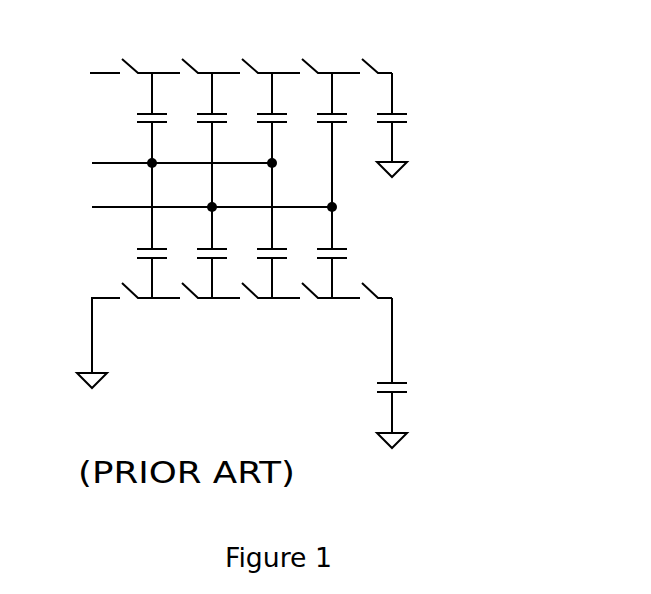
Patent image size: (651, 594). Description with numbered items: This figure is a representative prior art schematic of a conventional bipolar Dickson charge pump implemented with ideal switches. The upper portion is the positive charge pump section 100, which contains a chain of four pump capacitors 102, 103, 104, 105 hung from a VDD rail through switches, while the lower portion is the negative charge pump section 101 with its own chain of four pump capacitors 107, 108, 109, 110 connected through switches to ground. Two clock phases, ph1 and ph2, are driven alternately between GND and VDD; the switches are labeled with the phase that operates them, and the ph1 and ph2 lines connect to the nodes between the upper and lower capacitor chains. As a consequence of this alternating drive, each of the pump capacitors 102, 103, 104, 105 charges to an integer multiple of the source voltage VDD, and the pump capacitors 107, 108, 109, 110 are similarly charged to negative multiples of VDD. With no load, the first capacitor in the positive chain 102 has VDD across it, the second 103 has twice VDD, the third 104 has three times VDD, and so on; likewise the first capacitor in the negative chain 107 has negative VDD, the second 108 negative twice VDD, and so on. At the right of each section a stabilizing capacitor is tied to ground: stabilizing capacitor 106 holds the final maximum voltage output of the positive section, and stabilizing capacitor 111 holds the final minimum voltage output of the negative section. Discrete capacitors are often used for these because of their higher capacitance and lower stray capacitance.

The positive charge pump section 100 is at (465, 43).
The negative charge pump section 101 is at (465, 268).
The pump capacitor 102 is at (137, 161).
The pump capacitor 103 is at (197, 161).
The pump capacitor 104 is at (257, 161).
The pump capacitor 105 is at (317, 161).
The stabilizing capacitor 106 is at (409, 125).
The pump capacitor 107 is at (137, 259).
The pump capacitor 108 is at (197, 259).
The pump capacitor 109 is at (257, 259).
The pump capacitor 110 is at (317, 259).
The stabilizing capacitor 111 is at (407, 373).